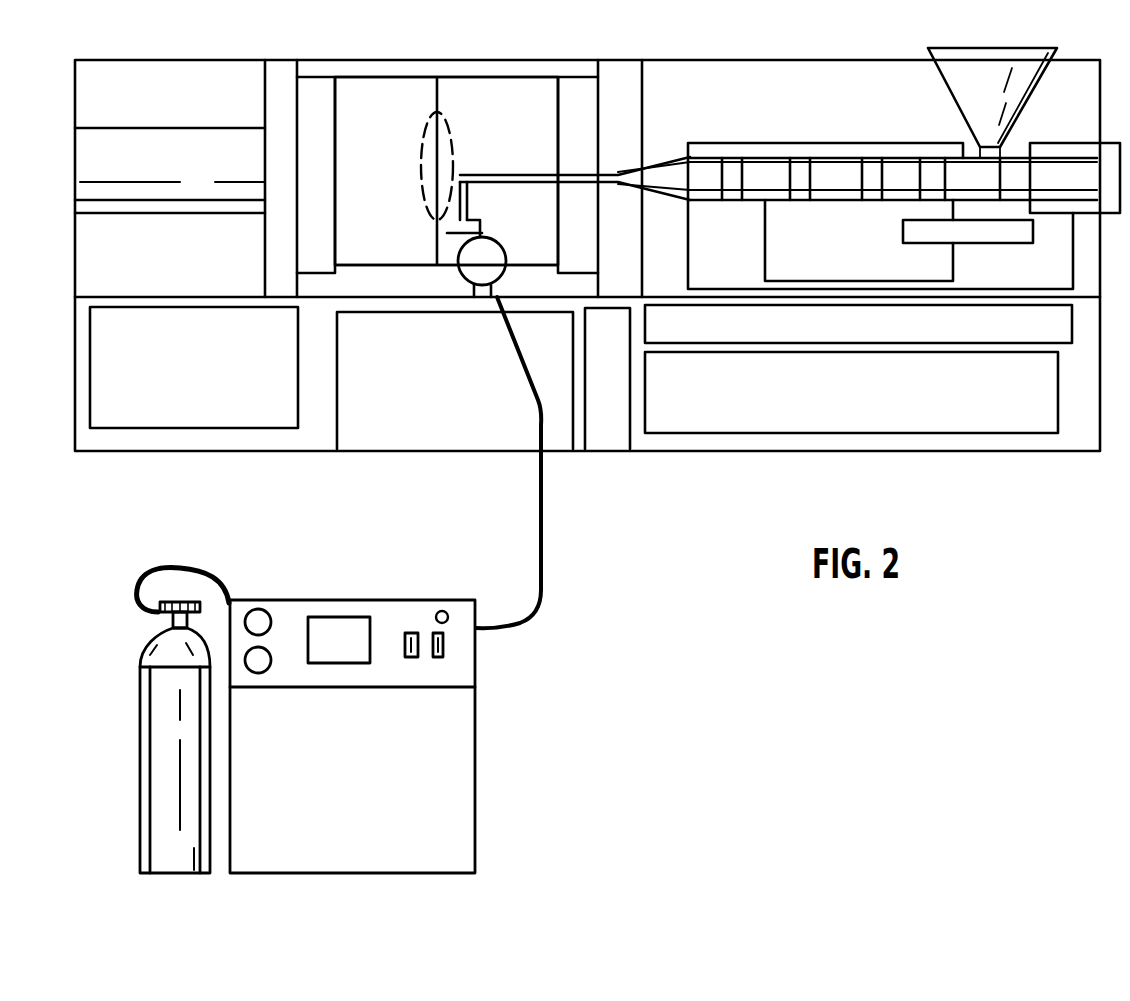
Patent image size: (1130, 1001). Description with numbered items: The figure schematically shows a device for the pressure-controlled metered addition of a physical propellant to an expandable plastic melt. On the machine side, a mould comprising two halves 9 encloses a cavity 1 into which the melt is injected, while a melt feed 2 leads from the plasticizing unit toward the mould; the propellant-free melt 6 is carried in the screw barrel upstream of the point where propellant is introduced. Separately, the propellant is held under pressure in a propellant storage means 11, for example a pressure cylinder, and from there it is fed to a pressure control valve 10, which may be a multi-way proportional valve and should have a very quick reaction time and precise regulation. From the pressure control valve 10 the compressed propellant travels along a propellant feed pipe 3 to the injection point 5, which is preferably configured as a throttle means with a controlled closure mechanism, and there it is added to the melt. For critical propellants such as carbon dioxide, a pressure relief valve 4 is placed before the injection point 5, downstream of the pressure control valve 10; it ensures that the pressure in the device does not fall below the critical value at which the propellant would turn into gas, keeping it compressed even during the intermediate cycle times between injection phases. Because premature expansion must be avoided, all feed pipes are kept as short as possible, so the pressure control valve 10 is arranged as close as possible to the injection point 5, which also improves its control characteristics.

The cavity 1 is at (424, 161).
The melt feed 2 is at (494, 174).
The propellant feed pipe 3 is at (483, 232).
The pressure relief valve 4 is at (478, 298).
The injection point 5 is at (446, 233).
The propellant-free melt 6 is at (845, 172).
The mould comprising two halves 9 is at (397, 86).
The pressure control valve 10 is at (461, 788).
The propellant storage means 11 is at (162, 724).